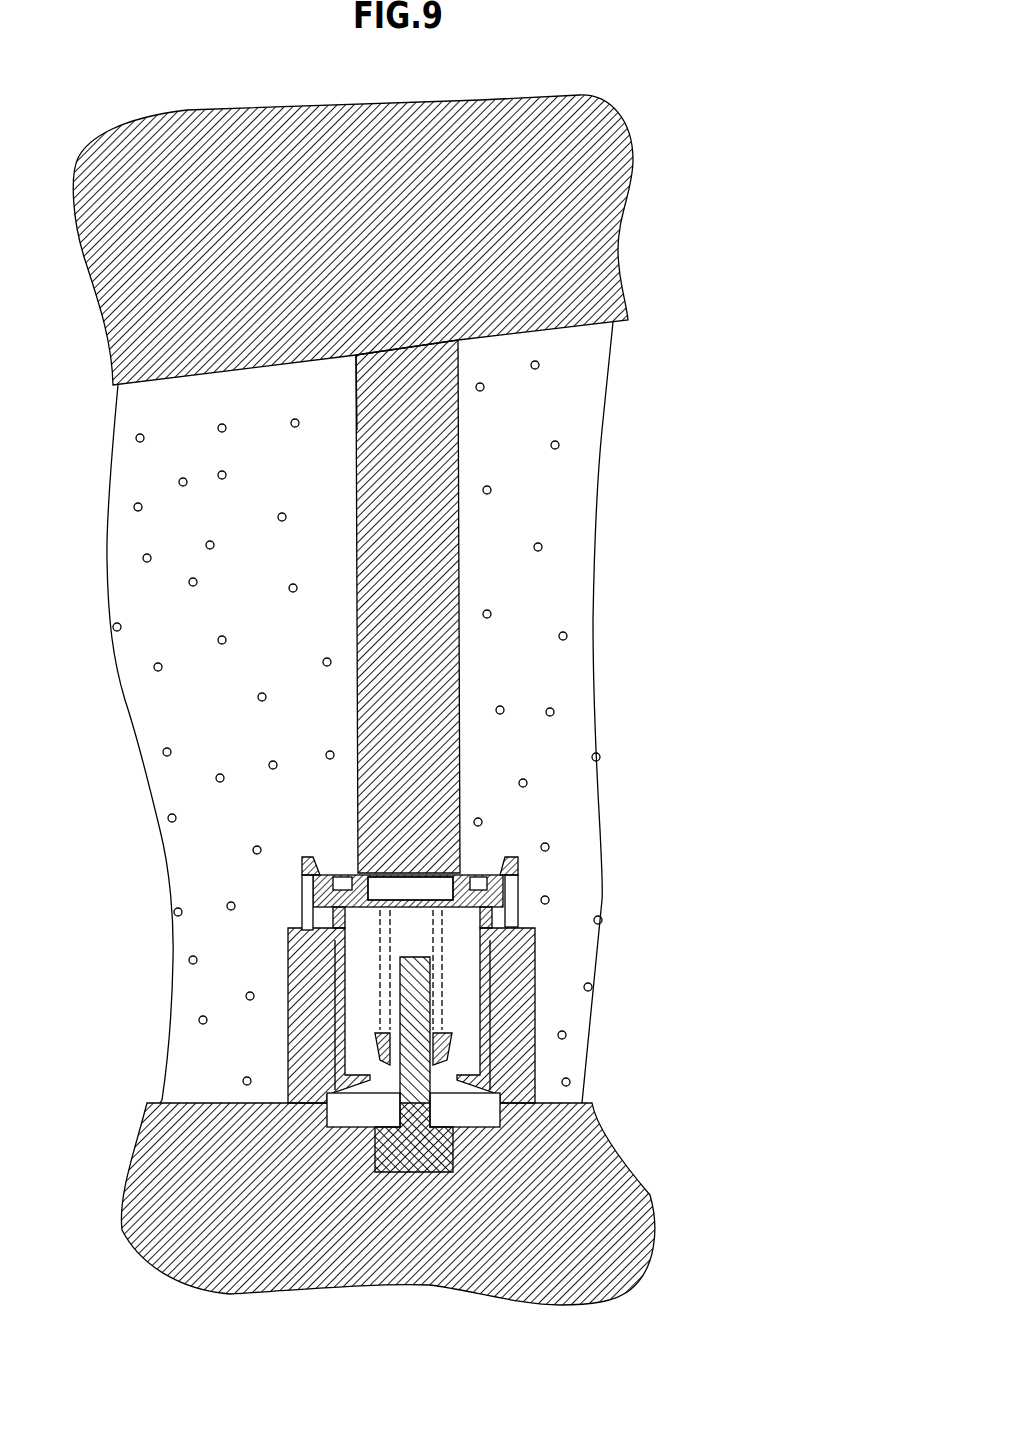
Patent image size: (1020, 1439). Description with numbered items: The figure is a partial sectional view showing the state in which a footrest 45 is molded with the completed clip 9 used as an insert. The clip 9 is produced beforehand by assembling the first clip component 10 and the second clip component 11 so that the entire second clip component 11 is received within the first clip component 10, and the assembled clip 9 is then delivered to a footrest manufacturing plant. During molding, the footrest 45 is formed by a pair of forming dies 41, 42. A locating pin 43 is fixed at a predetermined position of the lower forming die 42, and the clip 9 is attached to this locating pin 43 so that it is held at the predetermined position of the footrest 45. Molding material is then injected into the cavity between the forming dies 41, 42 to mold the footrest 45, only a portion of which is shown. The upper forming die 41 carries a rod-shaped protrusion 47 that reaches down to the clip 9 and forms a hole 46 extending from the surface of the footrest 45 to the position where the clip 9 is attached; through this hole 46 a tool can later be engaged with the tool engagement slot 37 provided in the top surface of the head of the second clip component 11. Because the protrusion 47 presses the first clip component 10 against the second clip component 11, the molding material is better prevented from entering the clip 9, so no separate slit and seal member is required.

The clip 9 is at (537, 903).
The first clip component 10 is at (522, 903).
The second clip component 11 is at (480, 862).
The tool engagement slot 37 is at (410, 887).
The forming die 41 is at (192, 140).
The forming die 42 is at (300, 1280).
The locating pin 43 is at (407, 1165).
The footrest 45 is at (172, 400).
The hole 46 is at (355, 397).
The rod-shaped protrusion 47 is at (430, 590).